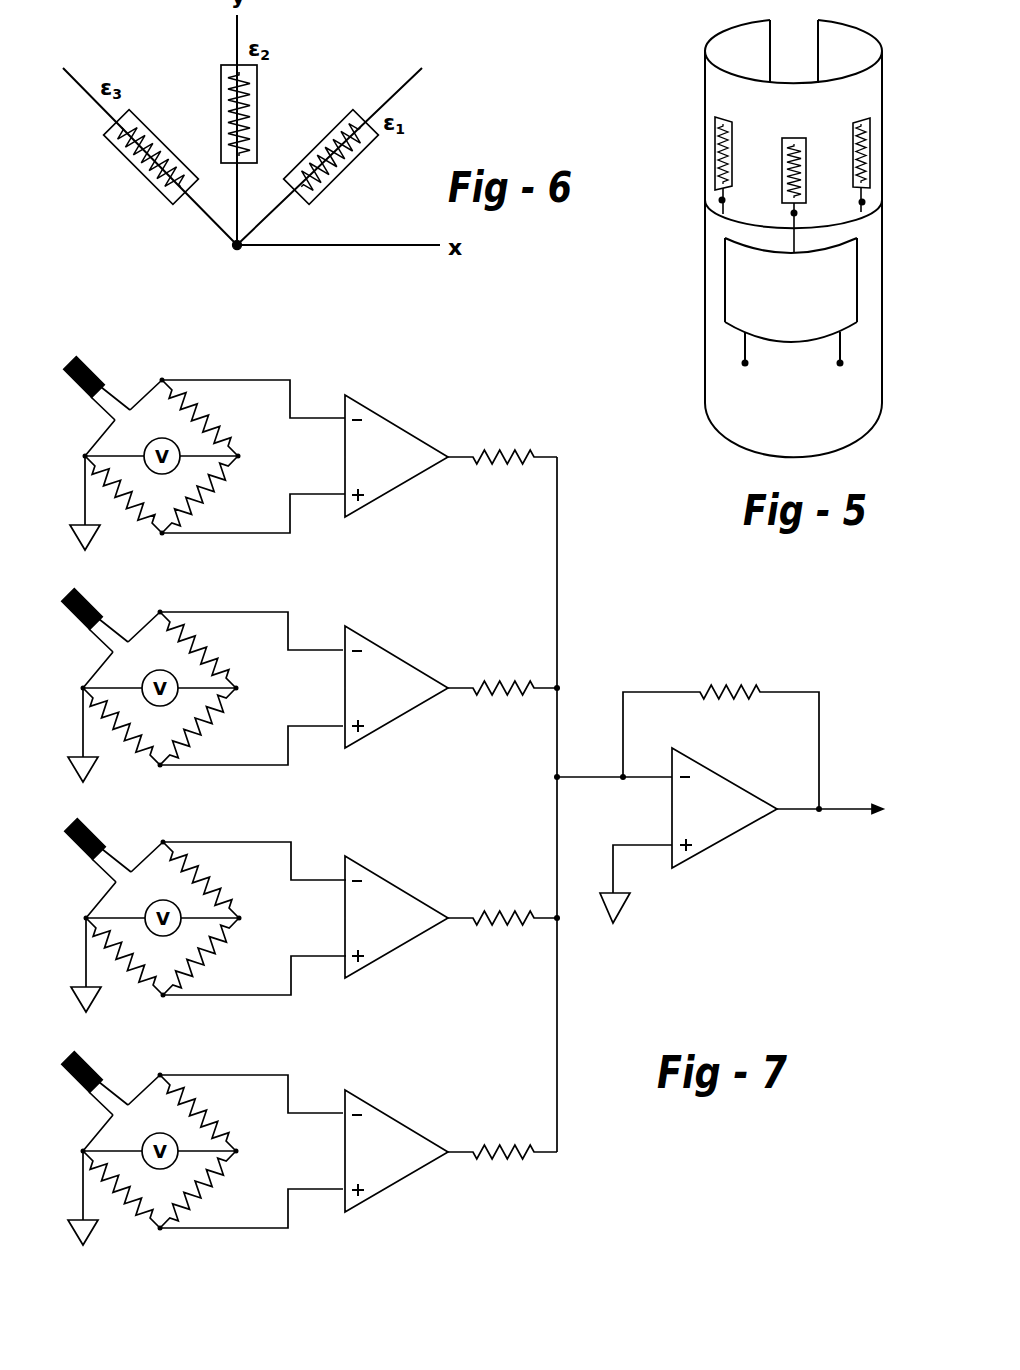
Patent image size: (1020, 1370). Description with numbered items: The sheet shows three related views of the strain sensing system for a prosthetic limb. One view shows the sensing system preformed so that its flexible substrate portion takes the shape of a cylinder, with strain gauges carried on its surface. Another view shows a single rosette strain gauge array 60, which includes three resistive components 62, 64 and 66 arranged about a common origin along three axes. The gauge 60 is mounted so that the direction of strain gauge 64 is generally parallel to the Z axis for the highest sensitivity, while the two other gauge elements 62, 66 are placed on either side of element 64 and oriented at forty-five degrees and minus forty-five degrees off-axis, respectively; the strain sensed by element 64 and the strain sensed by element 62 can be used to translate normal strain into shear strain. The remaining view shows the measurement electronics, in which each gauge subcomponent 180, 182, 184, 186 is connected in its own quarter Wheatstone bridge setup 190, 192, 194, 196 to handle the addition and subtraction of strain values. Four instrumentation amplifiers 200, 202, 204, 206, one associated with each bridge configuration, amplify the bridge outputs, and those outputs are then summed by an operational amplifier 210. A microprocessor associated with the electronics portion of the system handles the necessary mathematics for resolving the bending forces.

In FIG. 6, the rosette strain gauge array 60 is at (466, 84).
In FIG. 6, the resistive component 62 is at (334, 157).
In FIG. 6, the resistive component 64 is at (221, 114).
In FIG. 6, the resistive component 66 is at (150, 157).
In FIG. 7, the gauge subcomponent 180 is at (112, 373).
In FIG. 7, the gauge subcomponent 182 is at (113, 608).
In FIG. 7, the gauge subcomponent 184 is at (115, 838).
In FIG. 7, the gauge subcomponent 186 is at (113, 1069).
In FIG. 7, the quarter Wheatstone bridge setup 190 is at (218, 444).
In FIG. 7, the quarter Wheatstone bridge setup 192 is at (214, 675).
In FIG. 7, the quarter Wheatstone bridge setup 194 is at (216, 905).
In FIG. 7, the quarter Wheatstone bridge setup 196 is at (211, 1139).
In FIG. 7, the instrumentation amplifier 200 is at (451, 450).
In FIG. 7, the instrumentation amplifier 202 is at (451, 684).
In FIG. 7, the instrumentation amplifier 204 is at (451, 913).
In FIG. 7, the instrumentation amplifier 206 is at (451, 1148).
In FIG. 7, the operational amplifier 210 is at (705, 840).